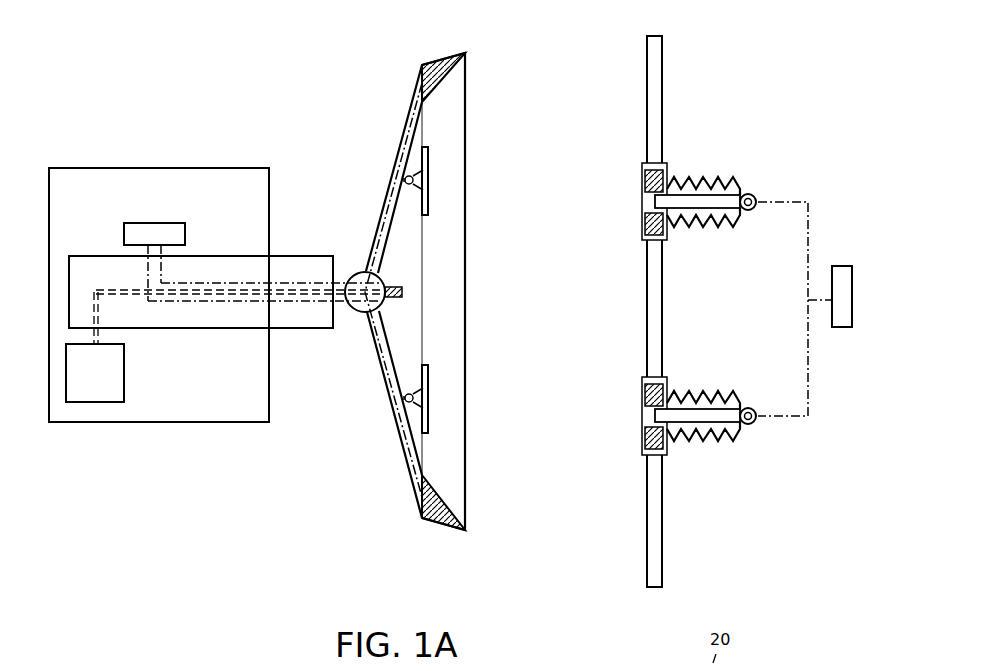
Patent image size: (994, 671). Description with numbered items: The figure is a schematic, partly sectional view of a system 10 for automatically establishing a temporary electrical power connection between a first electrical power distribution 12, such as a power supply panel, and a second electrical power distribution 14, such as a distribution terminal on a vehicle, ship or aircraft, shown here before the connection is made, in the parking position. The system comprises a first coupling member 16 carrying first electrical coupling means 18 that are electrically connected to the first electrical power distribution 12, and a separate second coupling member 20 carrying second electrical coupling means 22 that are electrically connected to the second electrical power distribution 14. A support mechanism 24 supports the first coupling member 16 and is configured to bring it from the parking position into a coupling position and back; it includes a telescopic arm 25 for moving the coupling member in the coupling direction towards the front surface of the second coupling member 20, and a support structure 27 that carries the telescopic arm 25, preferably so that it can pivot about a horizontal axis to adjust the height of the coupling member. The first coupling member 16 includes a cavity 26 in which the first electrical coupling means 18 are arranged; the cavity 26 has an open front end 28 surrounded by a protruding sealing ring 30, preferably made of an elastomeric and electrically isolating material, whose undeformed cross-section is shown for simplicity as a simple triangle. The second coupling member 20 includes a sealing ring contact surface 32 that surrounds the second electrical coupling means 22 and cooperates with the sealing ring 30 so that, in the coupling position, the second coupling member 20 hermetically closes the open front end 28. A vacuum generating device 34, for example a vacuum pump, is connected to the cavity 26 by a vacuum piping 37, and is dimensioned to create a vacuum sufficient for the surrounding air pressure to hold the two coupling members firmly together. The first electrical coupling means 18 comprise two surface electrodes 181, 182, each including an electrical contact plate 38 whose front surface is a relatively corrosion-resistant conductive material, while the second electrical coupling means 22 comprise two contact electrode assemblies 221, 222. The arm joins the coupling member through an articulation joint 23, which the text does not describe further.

The system 10 is at (260, 85).
The first electrical power distribution 12 is at (167, 230).
The second electrical power distribution 14 is at (843, 281).
The first coupling member 16 is at (433, 280).
The first electrical coupling means 18 is at (480, 297).
The surface electrode 181 is at (441, 176).
The surface electrode 182 is at (441, 388).
The second coupling member 20 is at (595, 64).
The second electrical coupling means 22 is at (641, 308).
The contact electrode assembly 221 is at (630, 200).
The contact electrode assembly 222 is at (633, 412).
The ball joint 23 is at (360, 276).
The support mechanism 24 is at (295, 364).
The telescopic arm 25 is at (300, 268).
The cavity 26 is at (447, 279).
The support structure 27 is at (226, 393).
The open front end 28 is at (482, 498).
The sealing ring 30 is at (450, 93).
The sealing ring contact surface 32 is at (640, 85).
The vacuum generating device 34 is at (100, 390).
The vacuum piping 37 is at (173, 292).
The electrical contact plate 38 is at (427, 155).